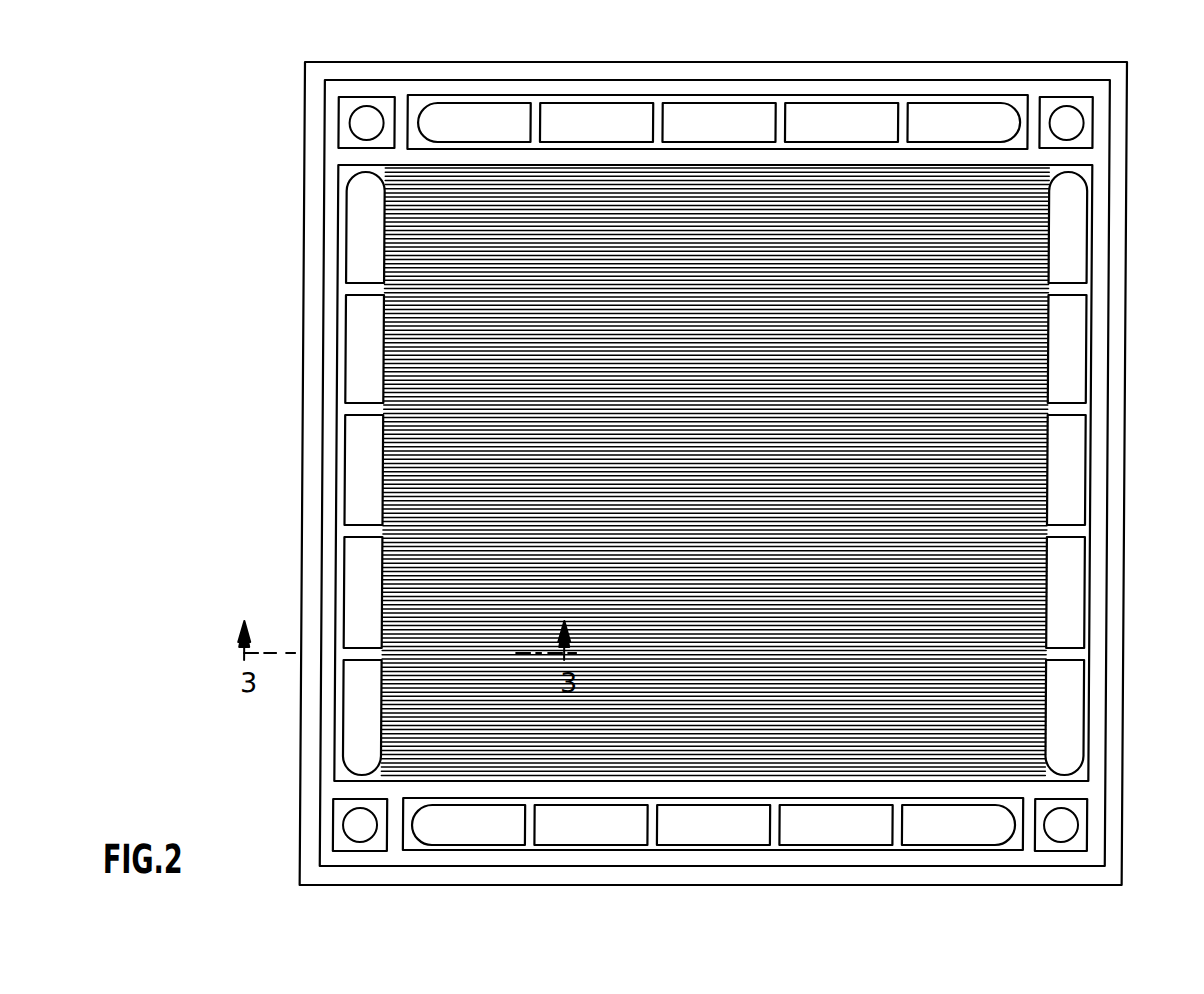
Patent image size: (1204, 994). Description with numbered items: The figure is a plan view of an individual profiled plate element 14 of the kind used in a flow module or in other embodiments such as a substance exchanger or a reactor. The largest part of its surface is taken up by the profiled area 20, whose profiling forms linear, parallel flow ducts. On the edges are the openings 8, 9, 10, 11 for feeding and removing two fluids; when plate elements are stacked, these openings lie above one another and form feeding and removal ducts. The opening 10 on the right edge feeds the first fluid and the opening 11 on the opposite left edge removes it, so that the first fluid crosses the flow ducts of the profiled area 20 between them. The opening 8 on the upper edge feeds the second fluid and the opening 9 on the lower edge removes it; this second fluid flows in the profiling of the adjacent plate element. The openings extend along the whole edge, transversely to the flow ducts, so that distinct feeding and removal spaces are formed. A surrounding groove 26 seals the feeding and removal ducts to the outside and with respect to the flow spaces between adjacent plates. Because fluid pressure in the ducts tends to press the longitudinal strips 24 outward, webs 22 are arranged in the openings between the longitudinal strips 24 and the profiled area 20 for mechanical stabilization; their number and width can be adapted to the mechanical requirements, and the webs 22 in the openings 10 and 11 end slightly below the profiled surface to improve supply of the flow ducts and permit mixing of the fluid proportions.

The opening for feeding the second fluid 8 is at (735, 115).
The opening for removal of the second fluid 9 is at (440, 822).
The opening for feeding the first fluid 10 is at (1077, 350).
The opening for removal of the first fluid 11 is at (357, 358).
The profiled plate element 14 is at (236, 298).
The profiled area 20 is at (498, 455).
The webs 22 is at (534, 118).
The longitudinal strips 24 is at (634, 70).
The surrounding groove 26 is at (330, 222).